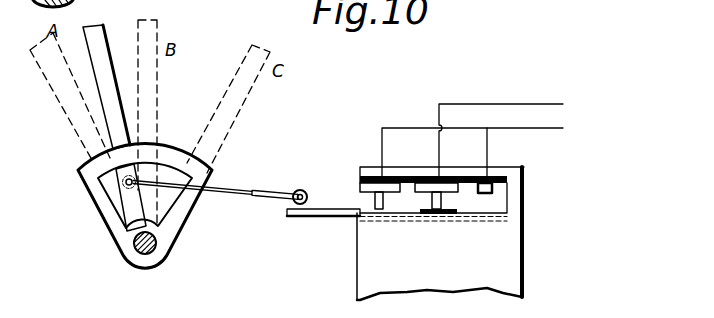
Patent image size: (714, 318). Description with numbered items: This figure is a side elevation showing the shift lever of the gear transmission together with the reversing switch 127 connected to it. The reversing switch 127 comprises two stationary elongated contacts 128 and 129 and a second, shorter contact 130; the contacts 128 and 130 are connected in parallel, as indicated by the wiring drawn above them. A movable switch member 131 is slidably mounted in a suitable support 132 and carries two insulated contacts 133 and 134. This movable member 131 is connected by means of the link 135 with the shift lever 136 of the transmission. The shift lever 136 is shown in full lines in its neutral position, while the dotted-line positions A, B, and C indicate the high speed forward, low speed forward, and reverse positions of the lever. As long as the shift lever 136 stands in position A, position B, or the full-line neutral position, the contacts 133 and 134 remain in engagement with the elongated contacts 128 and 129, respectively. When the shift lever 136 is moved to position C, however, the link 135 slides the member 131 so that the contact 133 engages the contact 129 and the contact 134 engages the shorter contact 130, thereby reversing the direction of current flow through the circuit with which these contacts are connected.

The reversing switch 127 is at (518, 207).
The stationary elongated contact 128 is at (363, 168).
The stationary elongated contact 129 is at (432, 187).
The shorter contact 130 is at (485, 187).
The movable switch member 131 is at (322, 217).
The support 132 is at (480, 267).
The insulated contact 133 is at (375, 199).
The insulated contact 134 is at (433, 200).
The link 135 is at (250, 198).
The shift lever 136 is at (100, 52).